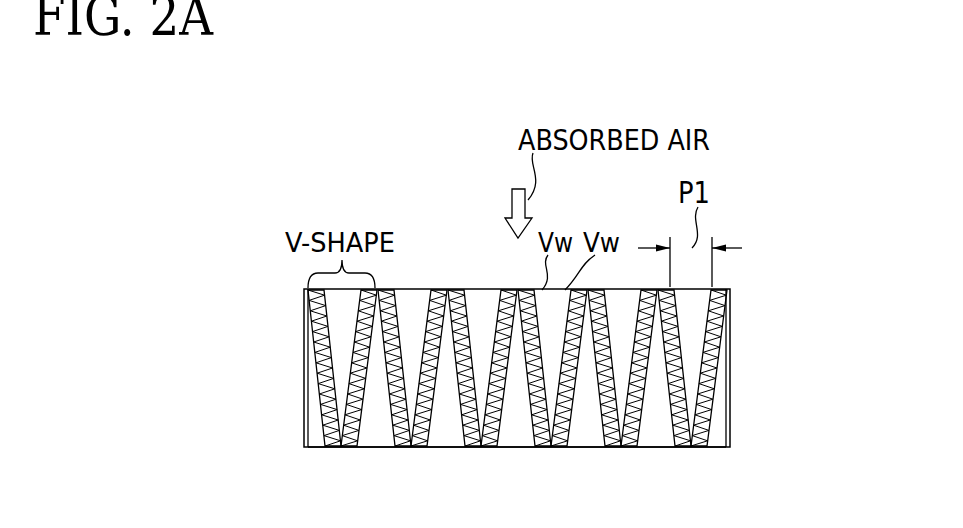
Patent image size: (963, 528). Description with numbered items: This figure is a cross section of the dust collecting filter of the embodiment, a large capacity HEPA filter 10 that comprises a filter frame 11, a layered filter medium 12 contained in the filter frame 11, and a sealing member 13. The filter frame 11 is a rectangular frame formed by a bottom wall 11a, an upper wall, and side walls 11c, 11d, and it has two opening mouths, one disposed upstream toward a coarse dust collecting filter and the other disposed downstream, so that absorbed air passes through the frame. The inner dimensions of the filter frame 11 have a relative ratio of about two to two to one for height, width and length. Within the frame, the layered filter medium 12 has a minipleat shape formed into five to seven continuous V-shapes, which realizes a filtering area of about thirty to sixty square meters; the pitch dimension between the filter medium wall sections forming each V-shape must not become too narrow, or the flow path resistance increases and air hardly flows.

The large capacity HEPA filter 10 is at (276, 292).
The filter frame 11 is at (731, 400).
The bottom wall 11a is at (658, 448).
The side wall 11c is at (305, 377).
The side wall 11d is at (731, 306).
The layered filter medium 12 is at (473, 290).
The sealing member 13 is at (448, 438).